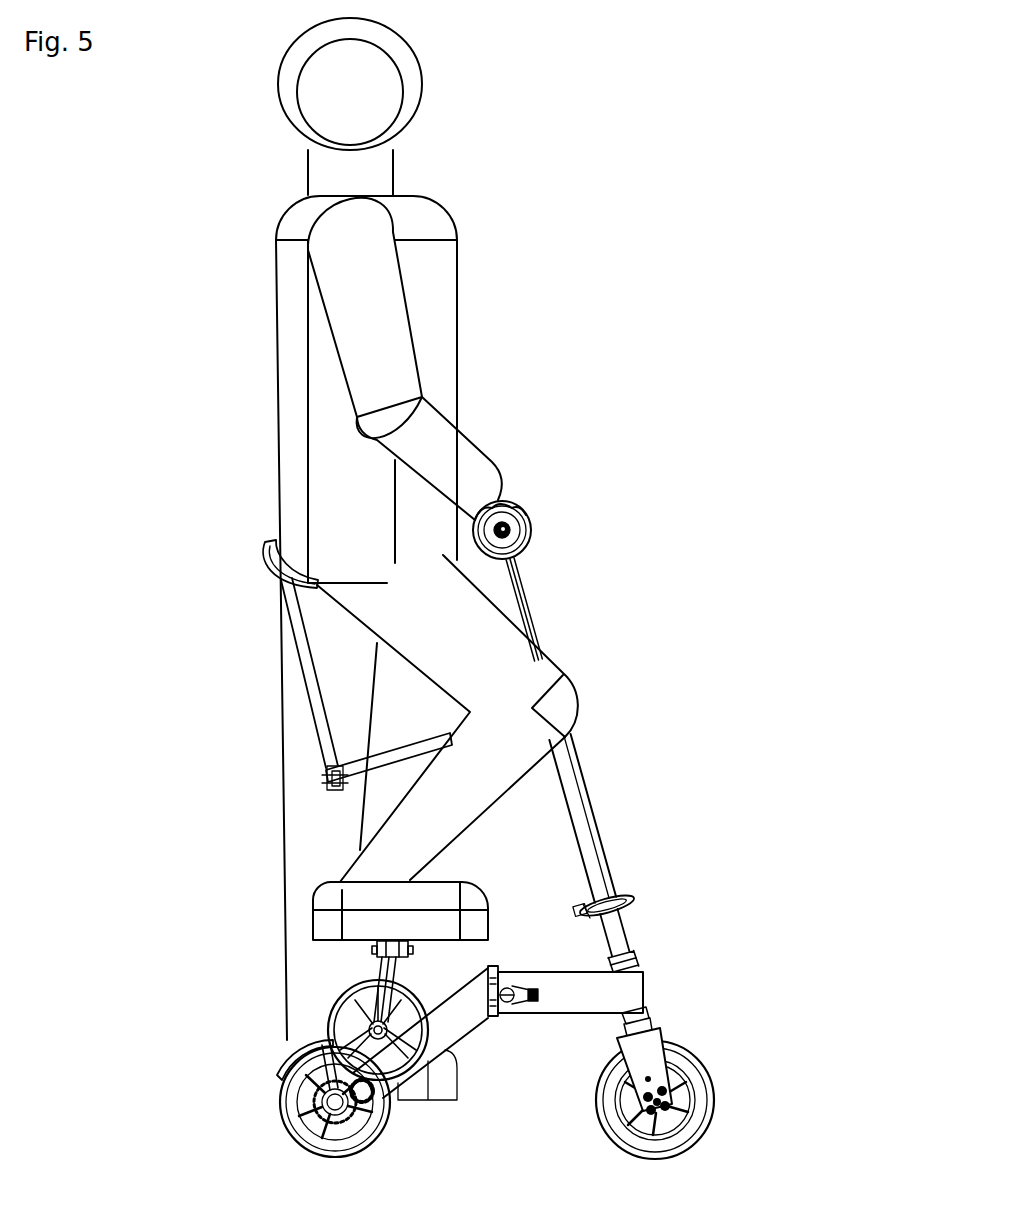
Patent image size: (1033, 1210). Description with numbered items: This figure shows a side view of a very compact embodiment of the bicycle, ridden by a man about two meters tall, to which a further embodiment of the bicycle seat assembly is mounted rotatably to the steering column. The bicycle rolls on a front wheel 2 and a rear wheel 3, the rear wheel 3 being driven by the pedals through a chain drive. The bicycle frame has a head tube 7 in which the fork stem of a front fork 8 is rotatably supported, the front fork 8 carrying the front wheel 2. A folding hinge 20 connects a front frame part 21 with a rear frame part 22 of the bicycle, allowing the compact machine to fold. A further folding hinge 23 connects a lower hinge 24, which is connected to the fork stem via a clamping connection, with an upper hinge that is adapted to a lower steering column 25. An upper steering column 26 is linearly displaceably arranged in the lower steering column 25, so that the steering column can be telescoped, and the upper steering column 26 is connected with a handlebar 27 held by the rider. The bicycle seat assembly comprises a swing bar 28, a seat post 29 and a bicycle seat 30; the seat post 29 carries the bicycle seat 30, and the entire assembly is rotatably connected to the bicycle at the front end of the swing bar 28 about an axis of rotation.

The front wheel 2 is at (705, 1082).
The rear wheel 3 is at (290, 1090).
The head tube 7 is at (630, 993).
The front fork 8 is at (647, 1055).
The folding hinge 20 is at (490, 1020).
The front frame part 21 is at (568, 990).
The rear frame part 22 is at (455, 1013).
The further folding hinge 23 is at (615, 903).
The lower hinge 24 is at (612, 945).
The lower steering column 25 is at (577, 807).
The upper steering column 26 is at (527, 604).
The handlebar 27 is at (528, 520).
The swing bar 28 is at (365, 790).
The seat post 29 is at (308, 663).
The bicycle seat 30 is at (265, 562).